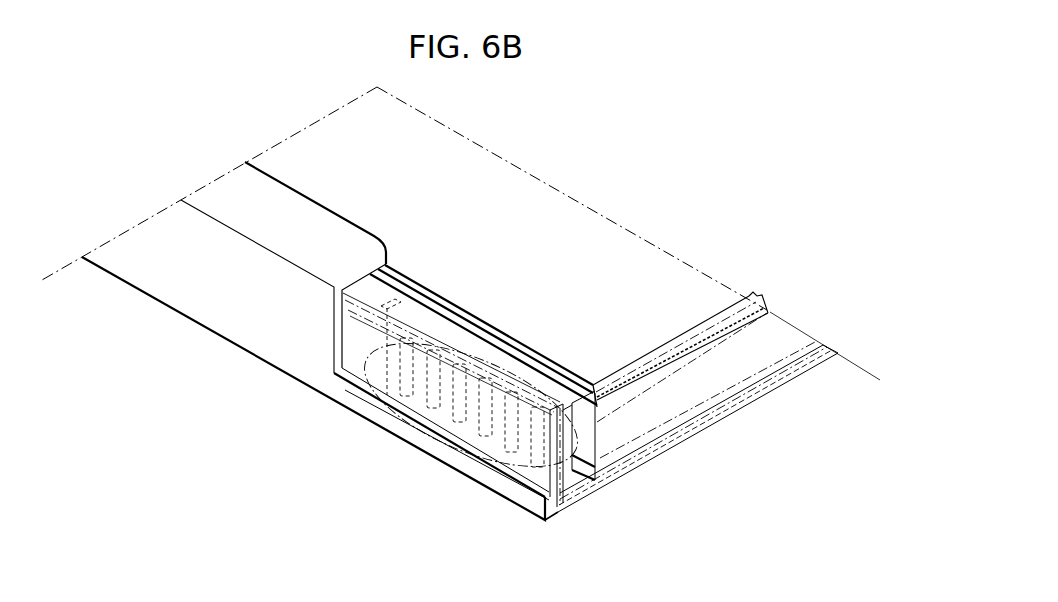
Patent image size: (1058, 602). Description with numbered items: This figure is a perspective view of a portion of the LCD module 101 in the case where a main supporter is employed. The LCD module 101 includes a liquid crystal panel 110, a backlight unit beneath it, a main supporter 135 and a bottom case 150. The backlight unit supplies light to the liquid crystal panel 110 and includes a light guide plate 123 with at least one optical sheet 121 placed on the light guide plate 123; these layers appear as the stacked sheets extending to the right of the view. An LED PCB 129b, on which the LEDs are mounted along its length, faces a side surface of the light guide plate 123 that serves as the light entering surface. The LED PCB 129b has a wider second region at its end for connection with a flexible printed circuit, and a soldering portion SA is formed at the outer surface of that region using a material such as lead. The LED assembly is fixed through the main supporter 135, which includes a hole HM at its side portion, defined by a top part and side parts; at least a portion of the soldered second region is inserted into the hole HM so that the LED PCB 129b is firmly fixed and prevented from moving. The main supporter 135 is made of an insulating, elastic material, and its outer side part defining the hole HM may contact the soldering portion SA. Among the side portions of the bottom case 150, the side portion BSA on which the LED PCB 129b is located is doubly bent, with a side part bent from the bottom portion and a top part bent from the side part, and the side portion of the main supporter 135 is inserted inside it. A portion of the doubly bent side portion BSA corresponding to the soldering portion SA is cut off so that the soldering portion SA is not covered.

The LCD module 101 is at (706, 131).
The liquid crystal panel 110 is at (752, 300).
The optical sheet 121 is at (772, 311).
The light guide plate 123 is at (822, 344).
The LED PCB 129b is at (571, 480).
The main supporter 135 is at (412, 310).
The bottom case 150 is at (233, 190).
The hole HM is at (569, 405).
The side portion BSA is at (242, 319).
The soldering portion SA is at (421, 450).